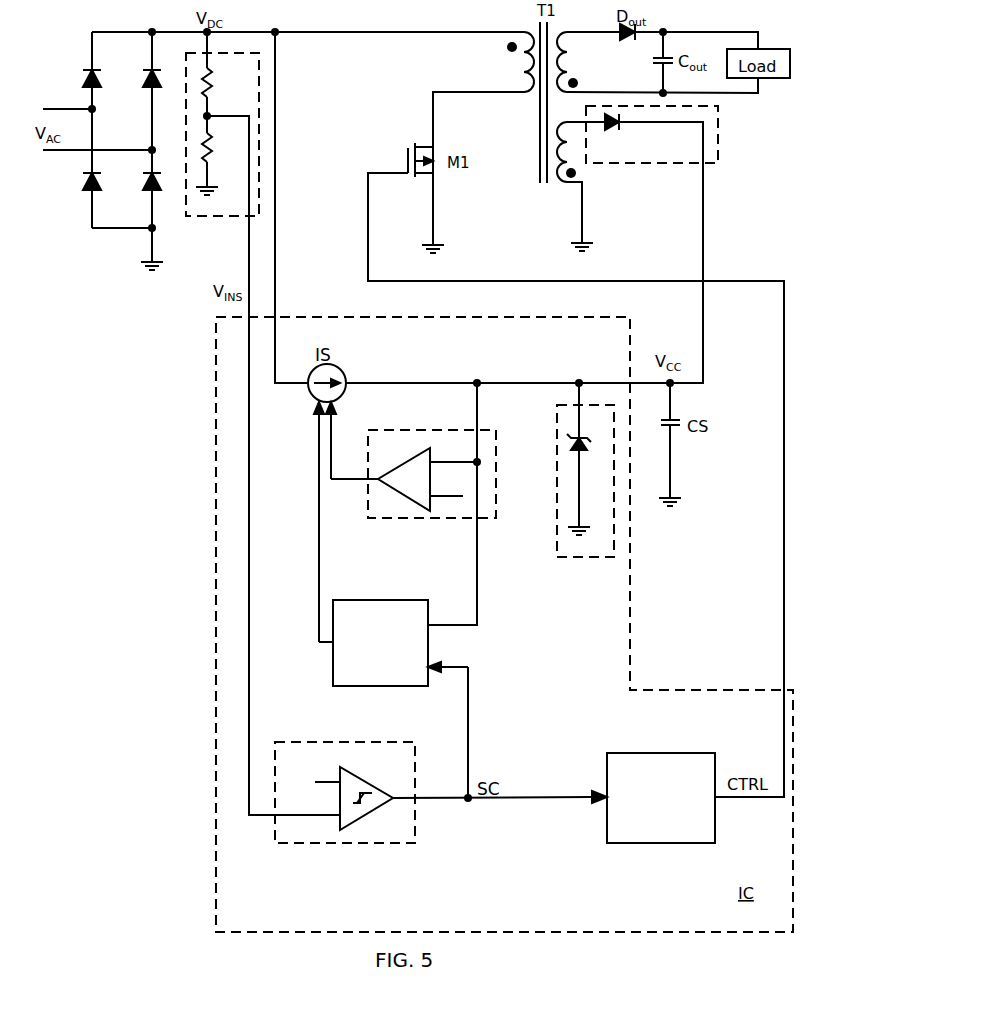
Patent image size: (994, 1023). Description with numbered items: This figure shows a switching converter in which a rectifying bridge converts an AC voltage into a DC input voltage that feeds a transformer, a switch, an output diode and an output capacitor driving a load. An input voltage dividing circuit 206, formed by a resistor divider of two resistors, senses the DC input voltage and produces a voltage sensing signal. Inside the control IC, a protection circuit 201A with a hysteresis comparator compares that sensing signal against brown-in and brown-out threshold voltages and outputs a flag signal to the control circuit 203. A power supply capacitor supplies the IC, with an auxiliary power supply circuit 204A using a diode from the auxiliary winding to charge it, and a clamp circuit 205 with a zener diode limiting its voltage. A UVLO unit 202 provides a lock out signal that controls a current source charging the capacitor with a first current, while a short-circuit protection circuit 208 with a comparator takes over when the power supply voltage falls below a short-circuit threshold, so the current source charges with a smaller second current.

The input voltage dividing circuit 206 is at (243, 216).
The auxiliary power supply circuit 204A is at (675, 163).
The short-circuit protection circuit 208 is at (382, 519).
The clamp circuit 205 is at (593, 558).
The UVLO unit 202 is at (375, 687).
The protection circuit 201A is at (307, 843).
The control circuit 203 is at (640, 843).